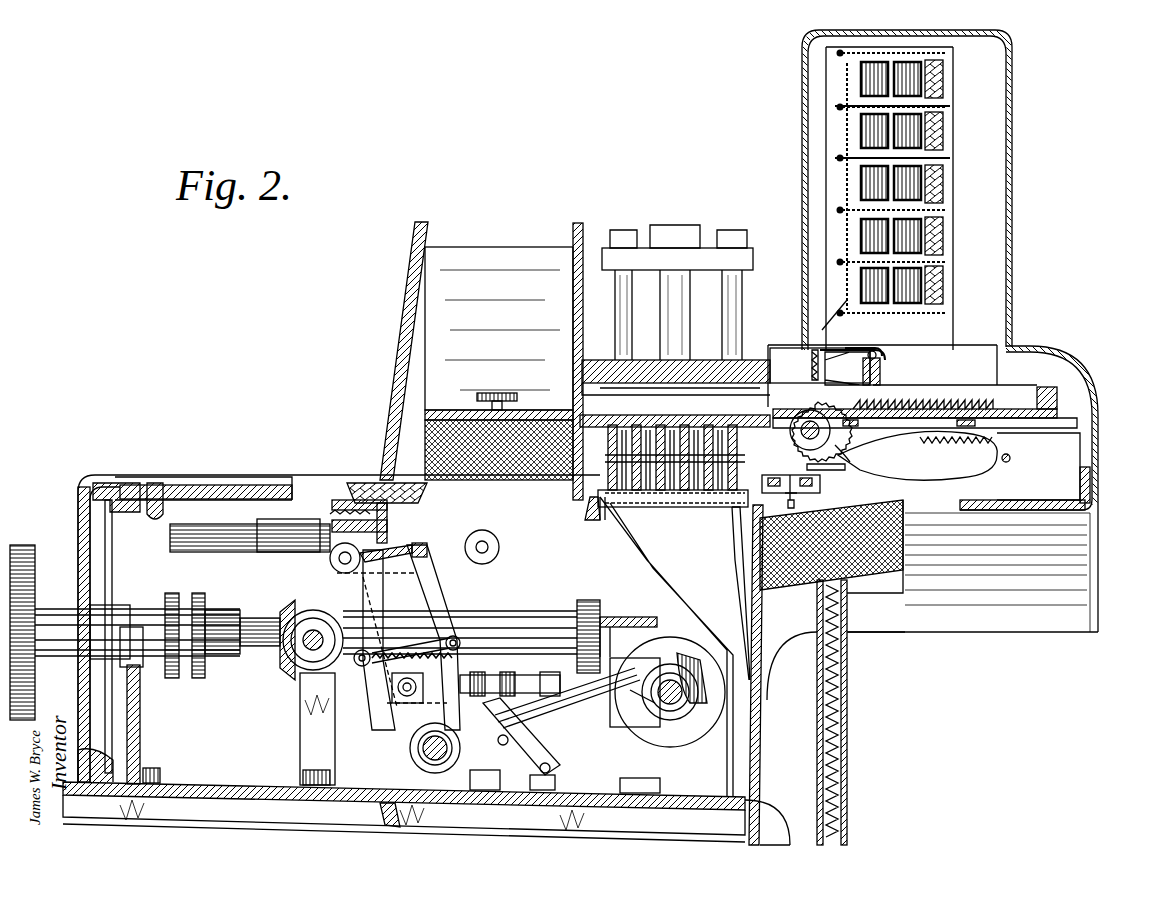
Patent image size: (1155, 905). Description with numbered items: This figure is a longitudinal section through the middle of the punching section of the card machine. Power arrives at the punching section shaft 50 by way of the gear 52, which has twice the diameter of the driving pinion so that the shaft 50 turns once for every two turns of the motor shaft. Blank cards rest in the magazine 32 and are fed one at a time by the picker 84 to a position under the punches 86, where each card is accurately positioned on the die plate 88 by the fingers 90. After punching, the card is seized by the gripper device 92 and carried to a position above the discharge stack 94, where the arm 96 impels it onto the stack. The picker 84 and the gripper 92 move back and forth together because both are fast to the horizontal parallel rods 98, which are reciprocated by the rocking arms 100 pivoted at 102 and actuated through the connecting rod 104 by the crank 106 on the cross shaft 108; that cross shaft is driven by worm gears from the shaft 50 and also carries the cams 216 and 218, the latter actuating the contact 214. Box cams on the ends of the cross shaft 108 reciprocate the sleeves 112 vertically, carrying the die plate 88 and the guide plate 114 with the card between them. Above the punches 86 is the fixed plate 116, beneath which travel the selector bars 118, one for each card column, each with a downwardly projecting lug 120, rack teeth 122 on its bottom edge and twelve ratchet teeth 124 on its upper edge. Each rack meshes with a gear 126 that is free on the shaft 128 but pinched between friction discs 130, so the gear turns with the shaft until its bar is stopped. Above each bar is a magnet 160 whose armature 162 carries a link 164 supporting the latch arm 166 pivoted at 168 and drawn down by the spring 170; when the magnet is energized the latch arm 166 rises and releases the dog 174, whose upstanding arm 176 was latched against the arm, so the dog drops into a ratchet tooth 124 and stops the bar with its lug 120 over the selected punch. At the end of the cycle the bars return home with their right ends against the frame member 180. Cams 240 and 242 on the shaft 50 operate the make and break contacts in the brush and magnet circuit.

The magazine 32 is at (450, 430).
The shaft 50 is at (505, 640).
The gear 52 is at (20, 545).
The picker 84 is at (400, 478).
The punches 86 is at (630, 415).
The die plate 88 is at (648, 507).
The fingers 90 is at (733, 548).
The gripper device 92 is at (822, 495).
The discharge stack 94 is at (870, 565).
The arm 96 is at (905, 450).
The horizontal parallel rods 98 is at (212, 524).
The rocking arms 100 is at (425, 615).
The pivot 102 is at (410, 748).
The connecting rod 104 is at (497, 683).
The crank 106 is at (625, 712).
The cross shaft 108 is at (676, 697).
The sleeves 112 is at (700, 290).
The guide plate 114 is at (588, 500).
The fixed plate 116 is at (595, 360).
The selector bars 118 is at (1010, 400).
The lug 120 is at (780, 400).
The rack teeth 122 is at (980, 408).
The ratchet teeth 124 is at (930, 402).
The gear 126 is at (832, 443).
The shaft 128 is at (852, 427).
The friction discs 130 is at (820, 455).
The magnet 160 is at (910, 72).
The armature 162 is at (845, 120).
The link 164 is at (985, 137).
The latch arm 166 is at (825, 335).
The pivot 168 is at (882, 348).
The spring 170 is at (799, 365).
The dog 174 is at (880, 368).
The upstanding arm 176 is at (850, 350).
The frame member 180 is at (1050, 395).
The contact 214 is at (645, 660).
The cam 216 is at (690, 655).
The cam 218 is at (660, 705).
The cam 240 is at (170, 593).
The cam 242 is at (205, 600).